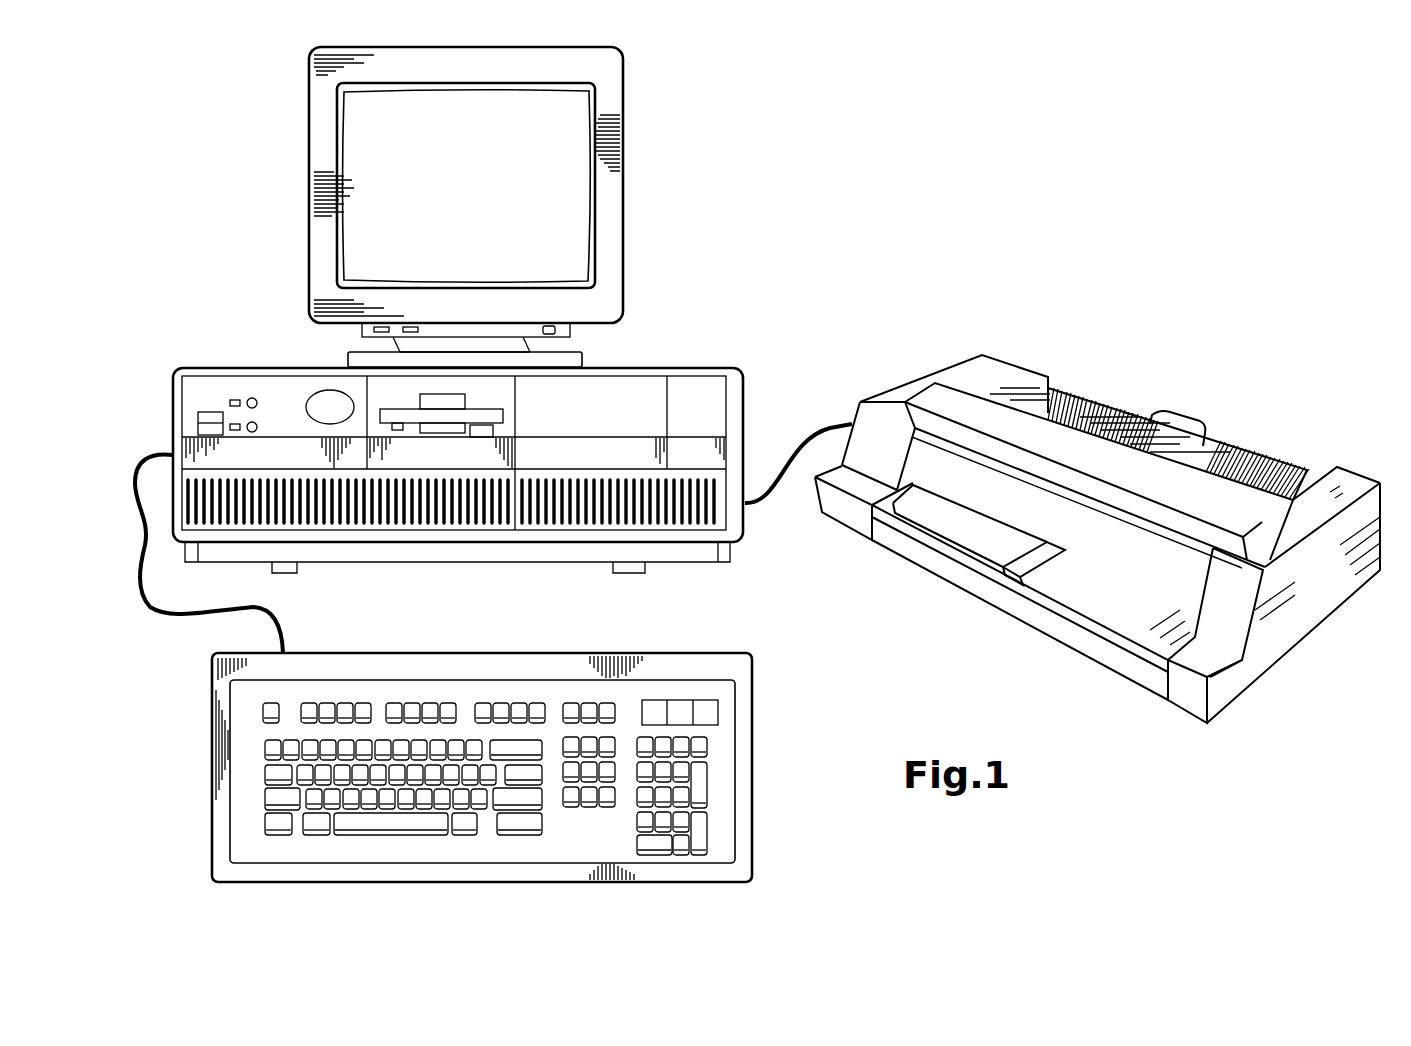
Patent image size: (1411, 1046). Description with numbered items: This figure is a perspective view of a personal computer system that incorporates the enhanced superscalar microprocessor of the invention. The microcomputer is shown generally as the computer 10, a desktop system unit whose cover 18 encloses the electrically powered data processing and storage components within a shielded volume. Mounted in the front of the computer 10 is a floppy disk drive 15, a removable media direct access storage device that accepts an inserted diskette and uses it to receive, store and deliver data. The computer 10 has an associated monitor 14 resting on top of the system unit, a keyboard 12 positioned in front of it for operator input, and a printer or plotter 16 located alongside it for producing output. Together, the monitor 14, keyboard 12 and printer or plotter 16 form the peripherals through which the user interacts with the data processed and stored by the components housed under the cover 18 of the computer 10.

The computer 10 is at (458, 440).
The keyboard 12 is at (419, 645).
The monitor 14 is at (630, 217).
The floppy disk drive 15 is at (456, 414).
The printer or plotter 16 is at (932, 362).
The cover 18 is at (387, 398).